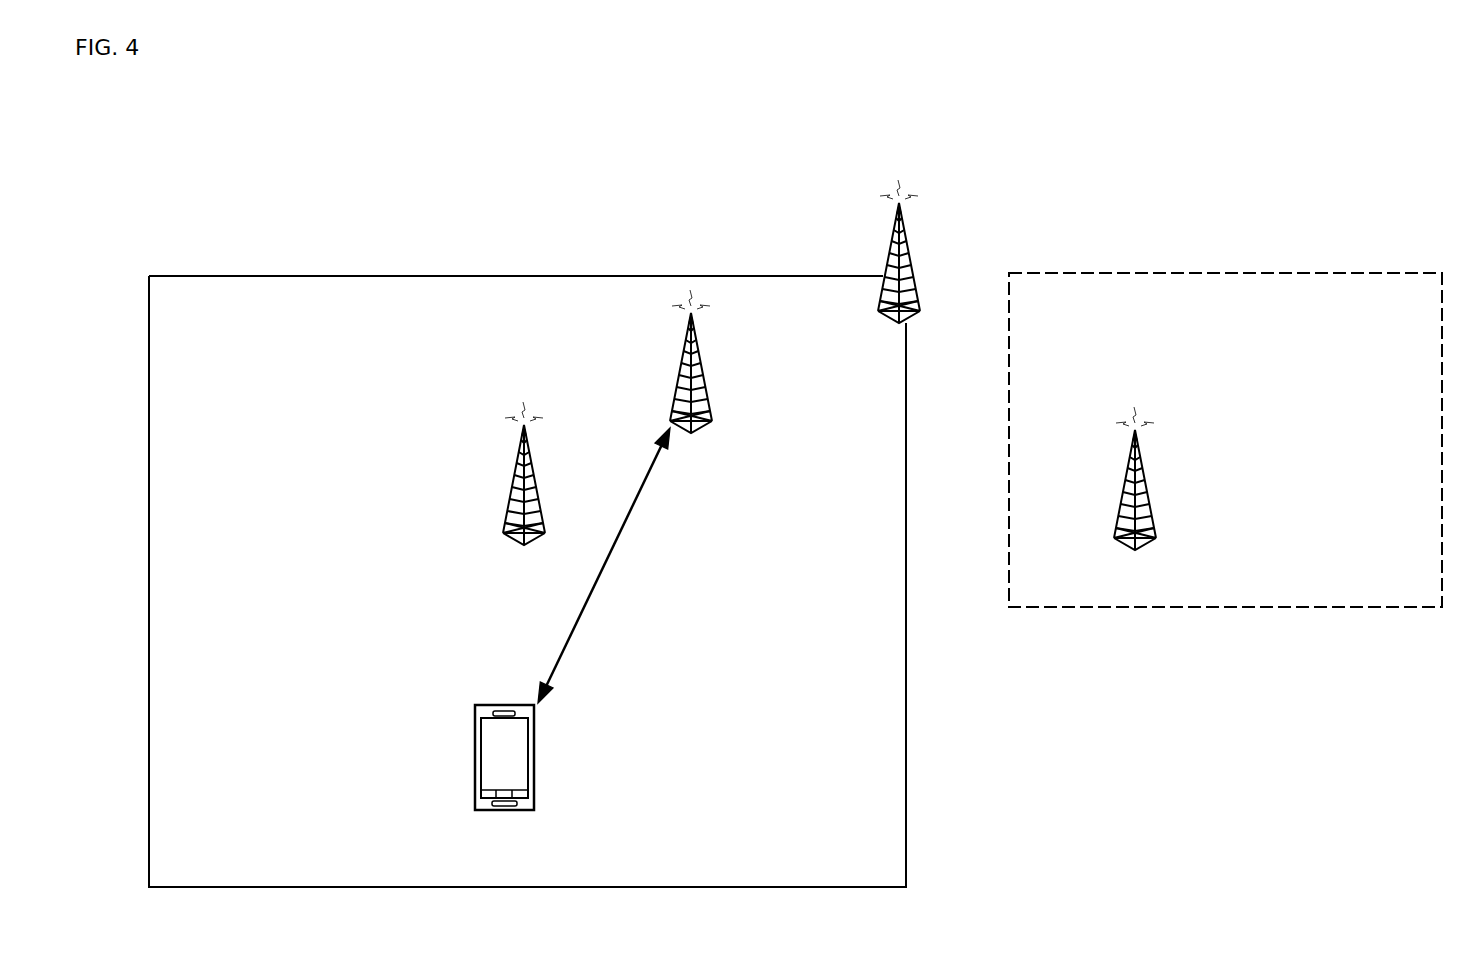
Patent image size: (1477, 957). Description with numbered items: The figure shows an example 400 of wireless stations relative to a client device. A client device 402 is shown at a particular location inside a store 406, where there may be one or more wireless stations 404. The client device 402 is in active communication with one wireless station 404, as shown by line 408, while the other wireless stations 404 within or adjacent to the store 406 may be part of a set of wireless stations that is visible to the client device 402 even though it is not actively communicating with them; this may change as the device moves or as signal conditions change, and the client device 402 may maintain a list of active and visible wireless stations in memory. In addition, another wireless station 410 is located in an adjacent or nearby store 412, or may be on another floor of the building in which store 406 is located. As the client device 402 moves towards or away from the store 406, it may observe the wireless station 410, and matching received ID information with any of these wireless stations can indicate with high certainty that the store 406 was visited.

The example 400 is at (305, 86).
The client device 402 is at (473, 758).
The wireless stations 404 is at (530, 458).
The store 406 is at (465, 276).
The line 408 is at (582, 613).
The wireless station 410 is at (1143, 488).
The adjacent or nearby store 412 is at (1078, 272).